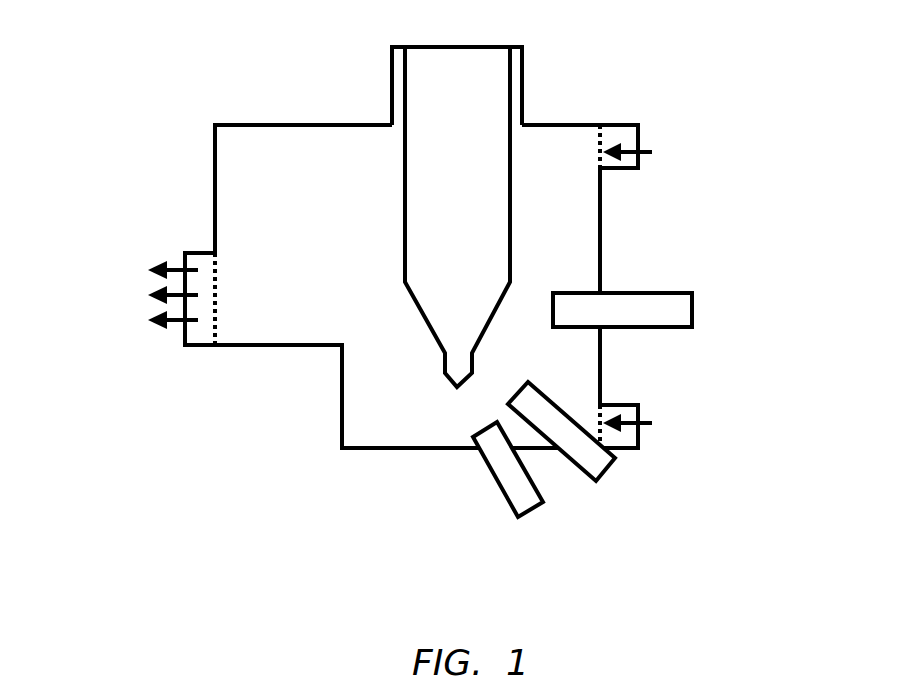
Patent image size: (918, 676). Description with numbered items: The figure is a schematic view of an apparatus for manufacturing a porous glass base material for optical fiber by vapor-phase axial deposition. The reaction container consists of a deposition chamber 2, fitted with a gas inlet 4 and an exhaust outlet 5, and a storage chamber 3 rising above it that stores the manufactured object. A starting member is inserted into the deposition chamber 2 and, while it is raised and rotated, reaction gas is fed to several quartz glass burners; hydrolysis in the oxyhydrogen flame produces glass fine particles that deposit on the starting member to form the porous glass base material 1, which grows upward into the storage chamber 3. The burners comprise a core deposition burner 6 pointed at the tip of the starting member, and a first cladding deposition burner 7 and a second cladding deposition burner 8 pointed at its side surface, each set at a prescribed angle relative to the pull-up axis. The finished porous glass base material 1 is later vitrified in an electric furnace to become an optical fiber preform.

The porous glass base material 1 is at (483, 112).
The deposition chamber 2 is at (303, 192).
The storage chamber 3 is at (388, 95).
The gas inlet 4 is at (630, 122).
The exhaust outlet 5 is at (198, 253).
The core deposition burner 6 is at (495, 488).
The first cladding deposition burner 7 is at (573, 467).
The second cladding deposition burner 8 is at (665, 308).